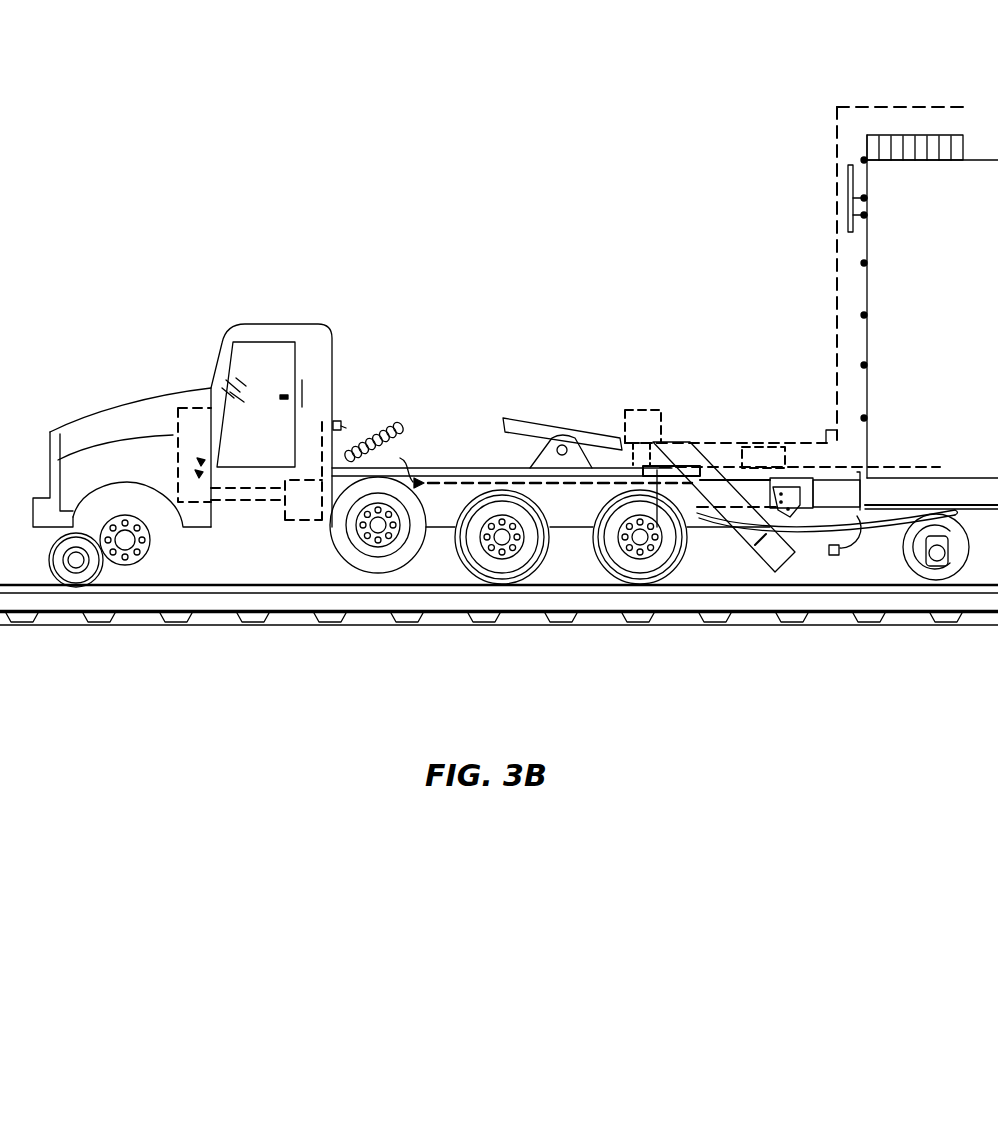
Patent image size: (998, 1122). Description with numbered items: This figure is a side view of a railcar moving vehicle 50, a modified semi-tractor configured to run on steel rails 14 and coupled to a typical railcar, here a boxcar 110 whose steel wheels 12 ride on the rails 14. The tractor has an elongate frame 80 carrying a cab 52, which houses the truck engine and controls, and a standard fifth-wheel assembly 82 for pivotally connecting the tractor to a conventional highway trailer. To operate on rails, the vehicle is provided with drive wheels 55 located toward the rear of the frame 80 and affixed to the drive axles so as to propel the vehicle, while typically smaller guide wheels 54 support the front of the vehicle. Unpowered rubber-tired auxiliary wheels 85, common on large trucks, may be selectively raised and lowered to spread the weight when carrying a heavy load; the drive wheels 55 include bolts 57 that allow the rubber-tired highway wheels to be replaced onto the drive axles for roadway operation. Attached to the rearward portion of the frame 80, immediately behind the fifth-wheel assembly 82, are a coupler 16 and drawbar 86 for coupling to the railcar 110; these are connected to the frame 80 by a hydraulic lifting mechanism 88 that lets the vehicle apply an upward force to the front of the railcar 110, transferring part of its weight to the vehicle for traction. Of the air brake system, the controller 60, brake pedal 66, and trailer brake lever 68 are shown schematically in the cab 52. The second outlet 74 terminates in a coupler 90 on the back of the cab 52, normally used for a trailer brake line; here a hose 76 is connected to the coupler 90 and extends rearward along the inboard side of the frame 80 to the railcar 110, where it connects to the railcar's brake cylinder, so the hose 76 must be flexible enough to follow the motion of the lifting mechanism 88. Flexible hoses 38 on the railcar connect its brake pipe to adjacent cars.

The steel wheels 12 is at (942, 580).
The steel rails 14 is at (203, 595).
The coupler 16 is at (785, 490).
The flexible hoses 38 is at (857, 553).
The railcar moving vehicle 50 is at (114, 302).
The cab 52 is at (312, 340).
The guide wheels 54 is at (68, 580).
The drive wheels 55 is at (510, 572).
The bolts 57 is at (523, 543).
The controller 60 is at (306, 504).
The brake pedal 66 is at (178, 440).
The trailer brake lever 68 is at (205, 400).
The second outlet 74 is at (337, 421).
The hose 76 is at (405, 470).
The frame 80 is at (440, 505).
The fifth-wheel assembly 82 is at (548, 428).
The auxiliary wheels 85 is at (375, 565).
The drawbar 86 is at (760, 450).
The hydraulic lifting mechanism 88 is at (673, 433).
The coupler 90 is at (372, 432).
The boxcar 110 is at (818, 216).